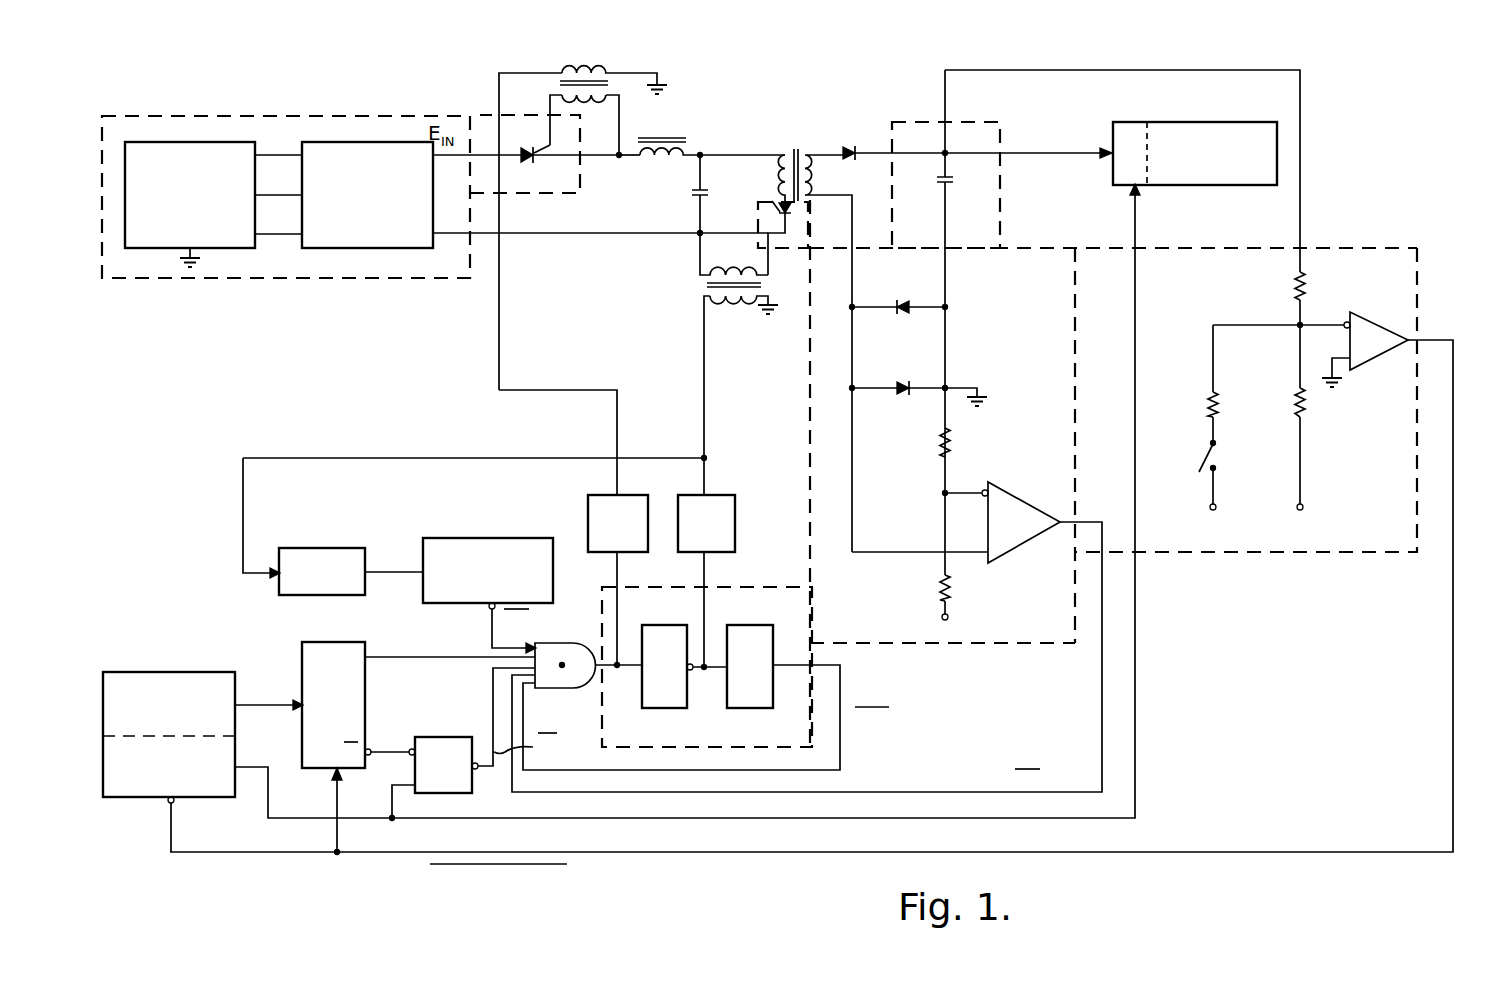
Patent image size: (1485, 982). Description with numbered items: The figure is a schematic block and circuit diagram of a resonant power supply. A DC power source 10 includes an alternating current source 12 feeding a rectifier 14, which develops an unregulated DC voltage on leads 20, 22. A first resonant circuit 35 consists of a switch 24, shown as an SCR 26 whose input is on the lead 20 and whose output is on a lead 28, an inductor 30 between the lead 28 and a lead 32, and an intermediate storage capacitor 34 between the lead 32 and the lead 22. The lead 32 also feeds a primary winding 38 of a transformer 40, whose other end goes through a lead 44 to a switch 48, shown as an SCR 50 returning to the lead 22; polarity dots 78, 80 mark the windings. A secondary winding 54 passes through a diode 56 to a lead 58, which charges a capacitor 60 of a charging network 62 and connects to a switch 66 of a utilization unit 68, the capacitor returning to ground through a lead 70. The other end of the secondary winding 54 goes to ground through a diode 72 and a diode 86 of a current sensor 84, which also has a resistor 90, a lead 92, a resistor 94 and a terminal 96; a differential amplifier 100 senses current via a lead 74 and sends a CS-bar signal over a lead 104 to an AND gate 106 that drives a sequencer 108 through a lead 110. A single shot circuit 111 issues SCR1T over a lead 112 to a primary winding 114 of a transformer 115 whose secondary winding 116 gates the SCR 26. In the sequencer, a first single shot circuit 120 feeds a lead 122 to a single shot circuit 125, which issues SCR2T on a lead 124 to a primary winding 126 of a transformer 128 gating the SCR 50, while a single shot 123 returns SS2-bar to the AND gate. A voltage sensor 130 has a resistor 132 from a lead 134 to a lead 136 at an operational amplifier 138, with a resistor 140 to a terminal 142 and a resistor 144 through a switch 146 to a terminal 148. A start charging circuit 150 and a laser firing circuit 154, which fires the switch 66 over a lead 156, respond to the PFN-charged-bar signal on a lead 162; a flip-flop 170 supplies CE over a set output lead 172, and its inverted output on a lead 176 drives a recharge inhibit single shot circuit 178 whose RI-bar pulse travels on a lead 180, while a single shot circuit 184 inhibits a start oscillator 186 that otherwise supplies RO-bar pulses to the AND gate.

The DC power source 10 is at (102, 282).
The alternating current source 12 is at (247, 148).
The rectifier 14 is at (300, 244).
The lead 20 is at (449, 160).
The lead 22 is at (457, 234).
The switch 24 is at (482, 116).
The SCR 26 is at (530, 161).
The lead 28 is at (597, 157).
The inductor 30 is at (704, 164).
The lead 32 is at (802, 322).
The intermediate storage capacitor 34 is at (697, 201).
The first resonant circuit 35 is at (660, 167).
The primary winding 38 is at (779, 168).
The transformer 40 is at (801, 138).
The lead 44 is at (758, 226).
The switch 48 is at (770, 250).
The SCR 50 is at (806, 219).
The secondary winding 54 is at (817, 178).
The diode 56 is at (858, 148).
The lead 58 is at (898, 148).
The capacitor 60 is at (948, 185).
The charging network 62 is at (999, 125).
The switch 66 is at (1190, 154).
The utilization unit 68 is at (1266, 186).
The lead 70 is at (948, 348).
The diode 72 is at (906, 315).
The lead 74 is at (855, 295).
The dot 78 is at (778, 198).
The dot 80 is at (814, 150).
The current sensor 84 is at (1070, 648).
The diode 86 is at (903, 397).
The resistor 90 is at (942, 450).
The lead 92 is at (954, 480).
The resistor 94 is at (960, 600).
The terminal 96 is at (950, 616).
The differential amplifier 100 is at (1018, 512).
The lead 104 is at (890, 794).
The AND gate 106 is at (582, 688).
The sequencer 108 is at (735, 588).
The lead 110 is at (617, 683).
The single shot circuit 111 is at (586, 498).
The lead 112 is at (545, 388).
The primary winding 114 is at (575, 91).
The transformer 115 is at (551, 76).
The secondary winding 116 is at (591, 101).
The first single shot circuit 120 is at (678, 622).
The lead 122 is at (709, 676).
The single shot 123 is at (770, 625).
The lead 124 is at (708, 478).
The single shot circuit 125 is at (681, 497).
The primary winding 126 is at (734, 302).
The transformer 128 is at (704, 364).
The voltage sensor 130 is at (1418, 248).
The resistor 132 is at (1296, 281).
The lead 134 is at (1303, 208).
The lead 136 is at (1324, 322).
The operational amplifier 138 is at (1375, 323).
The resistor 140 is at (1297, 410).
The -V terminal 142 is at (1305, 507).
The resistor 144 is at (1224, 402).
The switch 146 is at (1203, 449).
The -V terminal 148 is at (1219, 507).
The start charging circuit 150 is at (154, 676).
The laser firing circuit 154 is at (114, 793).
The lead 156 is at (1137, 793).
The lead 162 is at (1250, 852).
The charge enable flip-flop 170 is at (302, 645).
The set output lead 172 is at (412, 656).
The lead 176 is at (389, 747).
The recharge inhibit single shot circuit 178 is at (443, 737).
The lead 180 is at (485, 772).
The single shot circuit 184 is at (357, 550).
The start oscillator 186 is at (553, 601).